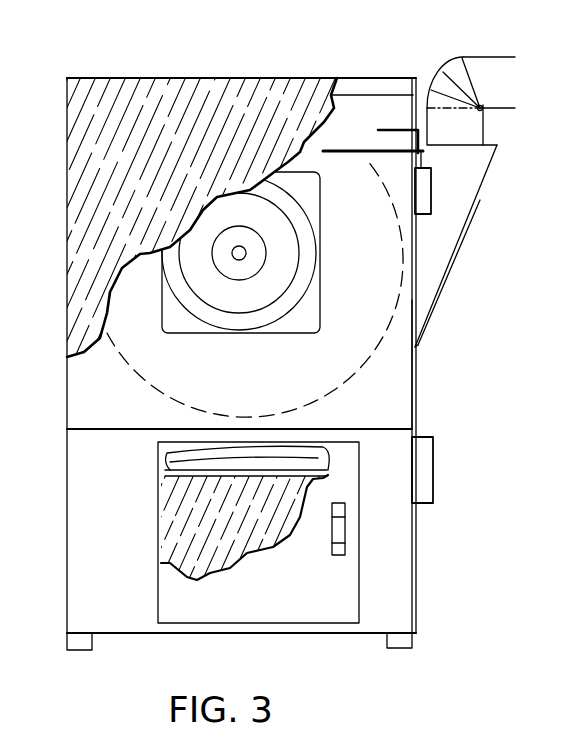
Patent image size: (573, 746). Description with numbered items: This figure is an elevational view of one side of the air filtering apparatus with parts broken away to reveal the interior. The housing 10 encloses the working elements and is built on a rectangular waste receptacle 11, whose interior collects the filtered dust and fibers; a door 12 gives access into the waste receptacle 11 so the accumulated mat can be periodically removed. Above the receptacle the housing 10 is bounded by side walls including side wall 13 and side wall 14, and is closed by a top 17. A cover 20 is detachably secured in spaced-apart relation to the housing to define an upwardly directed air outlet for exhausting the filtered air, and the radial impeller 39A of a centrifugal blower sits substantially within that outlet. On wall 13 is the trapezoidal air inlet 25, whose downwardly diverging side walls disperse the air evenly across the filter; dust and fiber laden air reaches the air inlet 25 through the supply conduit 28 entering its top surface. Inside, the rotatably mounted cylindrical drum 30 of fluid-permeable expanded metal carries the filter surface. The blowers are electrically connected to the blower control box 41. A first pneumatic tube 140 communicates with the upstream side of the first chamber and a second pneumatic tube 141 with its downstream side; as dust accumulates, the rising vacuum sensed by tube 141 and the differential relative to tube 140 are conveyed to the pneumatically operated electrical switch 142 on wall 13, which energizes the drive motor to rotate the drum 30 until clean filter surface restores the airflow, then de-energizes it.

The housing 10 is at (143, 60).
The waste receptacle 11 is at (76, 573).
The door 12 is at (323, 608).
The side wall 13 is at (416, 385).
The side wall 14 is at (67, 259).
The top 17 is at (203, 78).
The cover 20 is at (75, 118).
The air inlet 25 is at (447, 283).
The supply conduit 28 is at (483, 65).
The cylindrical drum 30 is at (341, 377).
The radial impeller 39A is at (224, 292).
The blower control box 41 is at (424, 490).
The first pneumatic tube 140 is at (383, 106).
The second pneumatic tube 141 is at (330, 155).
The pneumatically operated electrical switch 142 is at (428, 195).